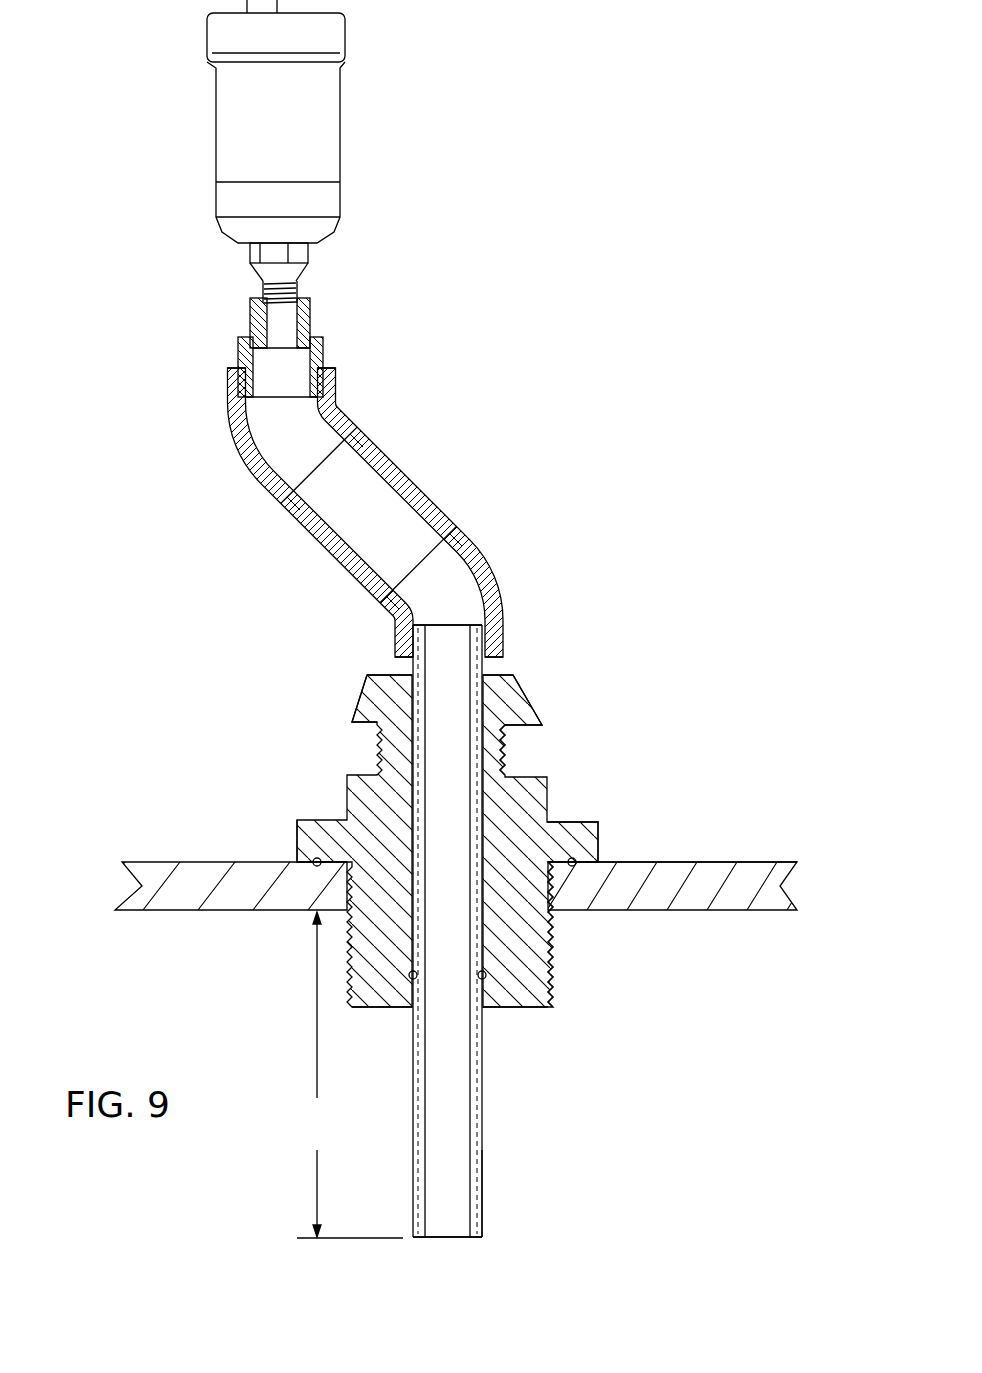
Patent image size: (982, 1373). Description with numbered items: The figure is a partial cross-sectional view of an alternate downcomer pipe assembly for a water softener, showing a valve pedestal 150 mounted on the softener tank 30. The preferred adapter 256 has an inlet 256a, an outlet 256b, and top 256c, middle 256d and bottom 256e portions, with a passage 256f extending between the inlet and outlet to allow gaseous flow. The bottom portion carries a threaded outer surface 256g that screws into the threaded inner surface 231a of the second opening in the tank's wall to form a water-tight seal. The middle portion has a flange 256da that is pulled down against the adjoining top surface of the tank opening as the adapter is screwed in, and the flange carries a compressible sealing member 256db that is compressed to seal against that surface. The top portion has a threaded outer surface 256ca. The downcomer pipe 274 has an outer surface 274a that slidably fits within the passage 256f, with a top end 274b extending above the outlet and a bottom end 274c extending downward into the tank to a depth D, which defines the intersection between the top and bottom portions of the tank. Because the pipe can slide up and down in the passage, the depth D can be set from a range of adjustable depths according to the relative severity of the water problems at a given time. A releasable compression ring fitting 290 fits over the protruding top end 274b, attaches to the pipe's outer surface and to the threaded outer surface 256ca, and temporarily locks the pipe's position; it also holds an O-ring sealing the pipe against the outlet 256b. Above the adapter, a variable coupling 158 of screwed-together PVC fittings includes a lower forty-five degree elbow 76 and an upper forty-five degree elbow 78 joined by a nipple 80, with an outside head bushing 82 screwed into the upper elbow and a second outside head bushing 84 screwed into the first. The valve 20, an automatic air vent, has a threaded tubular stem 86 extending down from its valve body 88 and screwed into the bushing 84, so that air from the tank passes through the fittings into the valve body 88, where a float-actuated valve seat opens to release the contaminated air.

The valve 20 is at (214, 113).
The valve body 88 is at (328, 105).
The stem 86 is at (297, 297).
The second outside head bushing 84 is at (310, 303).
The outside head bushing 82 is at (323, 348).
The upper 45 degree elbow 78 is at (337, 388).
The variable coupling 158 is at (230, 452).
The nipple 80 is at (387, 488).
The lower 45 degree elbow 76 is at (478, 562).
The valve pedestal 150 is at (297, 622).
The downcomer pipe 274 is at (448, 1140).
The outer surface 274a is at (482, 1192).
The top end 274b is at (490, 605).
The bottom end 274c is at (450, 1242).
The adapter 256 is at (523, 807).
The inlet 256a is at (487, 1010).
The outlet 256b is at (370, 680).
The top portion 256c is at (503, 740).
The threaded outer surface 256ca is at (505, 760).
The middle portion 256d is at (555, 822).
The flange 256da is at (575, 858).
The compressible sealing member 256db is at (300, 860).
The bottom portion 256e is at (520, 947).
The passage 256f is at (413, 1012).
The threaded outer surface 256g is at (548, 978).
The compression ring fitting 290 is at (353, 722).
The softener tank 30 is at (717, 903).
The threaded inner surface 231a is at (620, 865).
The depth D is at (350, 1075).